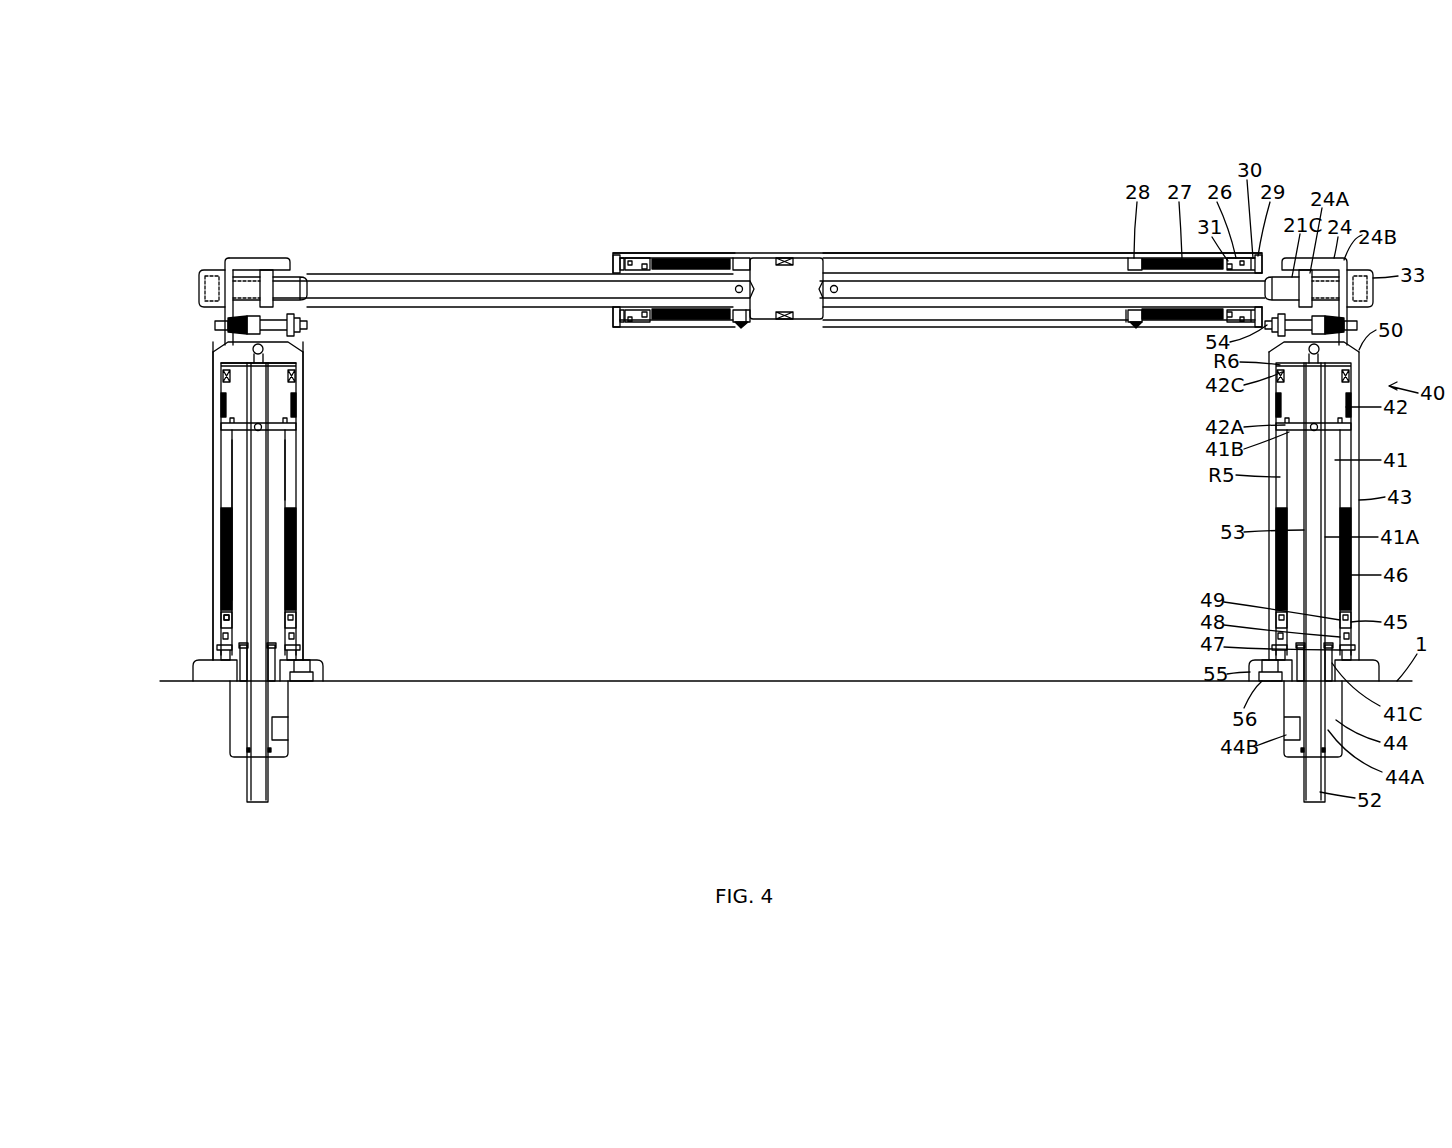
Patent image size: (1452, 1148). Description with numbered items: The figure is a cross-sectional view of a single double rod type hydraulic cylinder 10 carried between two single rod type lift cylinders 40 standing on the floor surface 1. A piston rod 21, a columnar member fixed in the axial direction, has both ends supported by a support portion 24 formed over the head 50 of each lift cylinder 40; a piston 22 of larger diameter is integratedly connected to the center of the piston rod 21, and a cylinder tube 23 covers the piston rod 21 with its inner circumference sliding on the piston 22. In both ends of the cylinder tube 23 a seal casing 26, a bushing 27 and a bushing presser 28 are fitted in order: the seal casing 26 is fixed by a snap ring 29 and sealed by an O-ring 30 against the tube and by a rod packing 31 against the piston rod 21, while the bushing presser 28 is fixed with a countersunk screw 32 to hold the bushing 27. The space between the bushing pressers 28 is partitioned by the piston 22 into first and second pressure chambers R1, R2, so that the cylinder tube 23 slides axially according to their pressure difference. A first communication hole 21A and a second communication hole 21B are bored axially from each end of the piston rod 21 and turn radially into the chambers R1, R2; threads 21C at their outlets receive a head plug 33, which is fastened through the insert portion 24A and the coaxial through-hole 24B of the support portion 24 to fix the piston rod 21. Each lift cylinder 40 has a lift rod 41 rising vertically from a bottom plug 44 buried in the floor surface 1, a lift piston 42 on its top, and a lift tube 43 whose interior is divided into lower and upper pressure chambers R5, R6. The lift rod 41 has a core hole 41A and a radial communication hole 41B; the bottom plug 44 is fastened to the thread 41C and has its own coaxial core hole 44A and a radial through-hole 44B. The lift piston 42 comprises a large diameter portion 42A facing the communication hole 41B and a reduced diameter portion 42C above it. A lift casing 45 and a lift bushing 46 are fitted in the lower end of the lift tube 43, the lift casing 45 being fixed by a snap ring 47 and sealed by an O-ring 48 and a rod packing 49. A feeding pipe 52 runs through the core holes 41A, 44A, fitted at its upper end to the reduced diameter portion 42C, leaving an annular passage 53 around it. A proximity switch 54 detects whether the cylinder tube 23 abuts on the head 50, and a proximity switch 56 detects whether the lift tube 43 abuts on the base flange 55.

The floor surface 1 is at (175, 681).
The hydraulic cylinder 10 is at (1094, 164).
The piston rod 21 is at (1005, 273).
The first communication hole 21A is at (542, 290).
The second communication hole 21B is at (1048, 290).
The threads 21C is at (282, 277).
The piston 22 is at (820, 258).
The cylinder tube 23 is at (925, 258).
The support portion 24 is at (238, 258).
The insert portion 24A is at (260, 273).
The through-hole 24B is at (228, 260).
The seal casing 26 is at (640, 258).
The bushing 27 is at (690, 258).
The bushing presser 28 is at (738, 258).
The snap ring 29 is at (617, 256).
The O-ring 30 is at (621, 258).
The rod packing 31 is at (648, 261).
The countersunk screw 32 is at (1134, 328).
The head plug 33 is at (199, 278).
The lift cylinder 40 is at (175, 390).
The lift rod 41 is at (237, 460).
The core hole 41A is at (247, 537).
The communication hole 41B is at (283, 432).
The thread 41C is at (240, 663).
The lift piston 42 is at (226, 407).
The large diameter portion 42A is at (287, 425).
The reduced diameter portion 42C is at (290, 372).
The lift tube 43 is at (213, 500).
The bottom plug 44 is at (236, 720).
The core hole 44A is at (244, 730).
The through-hole 44B is at (286, 735).
The lift casing 45 is at (221, 622).
The lift bushing 46 is at (225, 575).
The snap ring 47 is at (232, 650).
The O-ring 48 is at (232, 637).
The rod packing 49 is at (232, 620).
The head 50 is at (213, 350).
The feeding pipe 52 is at (252, 792).
The annular passage 53 is at (268, 530).
The proximity switch 54 is at (305, 325).
The base flange 55 is at (322, 672).
The proximity switch 56 is at (310, 681).
The first pressure chamber R1 is at (748, 328).
The second pressure chamber R2 is at (905, 320).
The lower pressure chamber R5 is at (292, 477).
The upper pressure chamber R6 is at (292, 365).